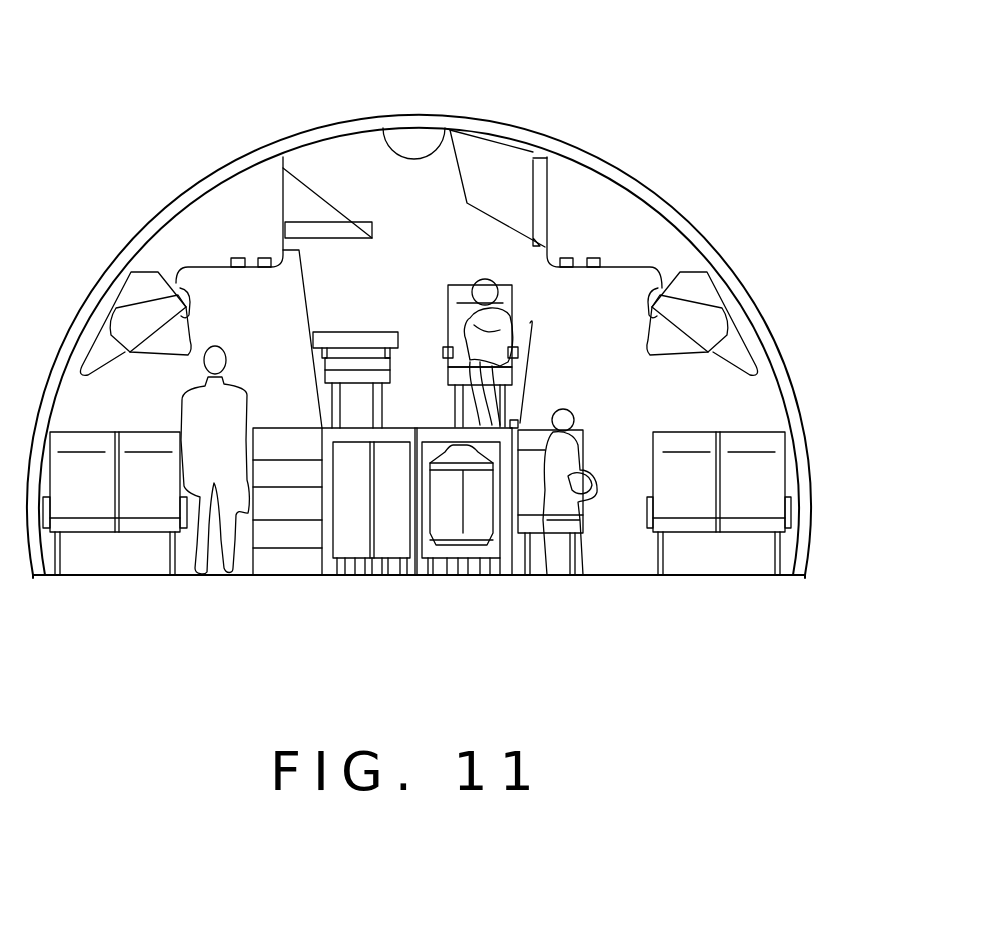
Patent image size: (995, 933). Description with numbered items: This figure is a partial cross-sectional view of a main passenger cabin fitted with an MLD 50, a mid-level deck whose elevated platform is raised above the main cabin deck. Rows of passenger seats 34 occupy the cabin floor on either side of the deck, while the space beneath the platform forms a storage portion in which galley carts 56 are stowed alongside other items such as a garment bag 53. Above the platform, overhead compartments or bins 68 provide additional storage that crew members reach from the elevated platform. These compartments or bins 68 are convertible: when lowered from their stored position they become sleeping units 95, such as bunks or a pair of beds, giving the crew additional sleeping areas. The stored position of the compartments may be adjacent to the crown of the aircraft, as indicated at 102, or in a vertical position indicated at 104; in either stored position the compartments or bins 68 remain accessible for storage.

The passenger seats 34 is at (750, 487).
The MLD 50 is at (262, 325).
The garment bag 53 is at (477, 522).
The galley carts 56 is at (358, 533).
The overhead compartments or bins 68 is at (522, 177).
The sleeping units 95 is at (307, 228).
The stored position adjacent the crown 102 is at (476, 143).
The vertical stored position 104 is at (550, 192).